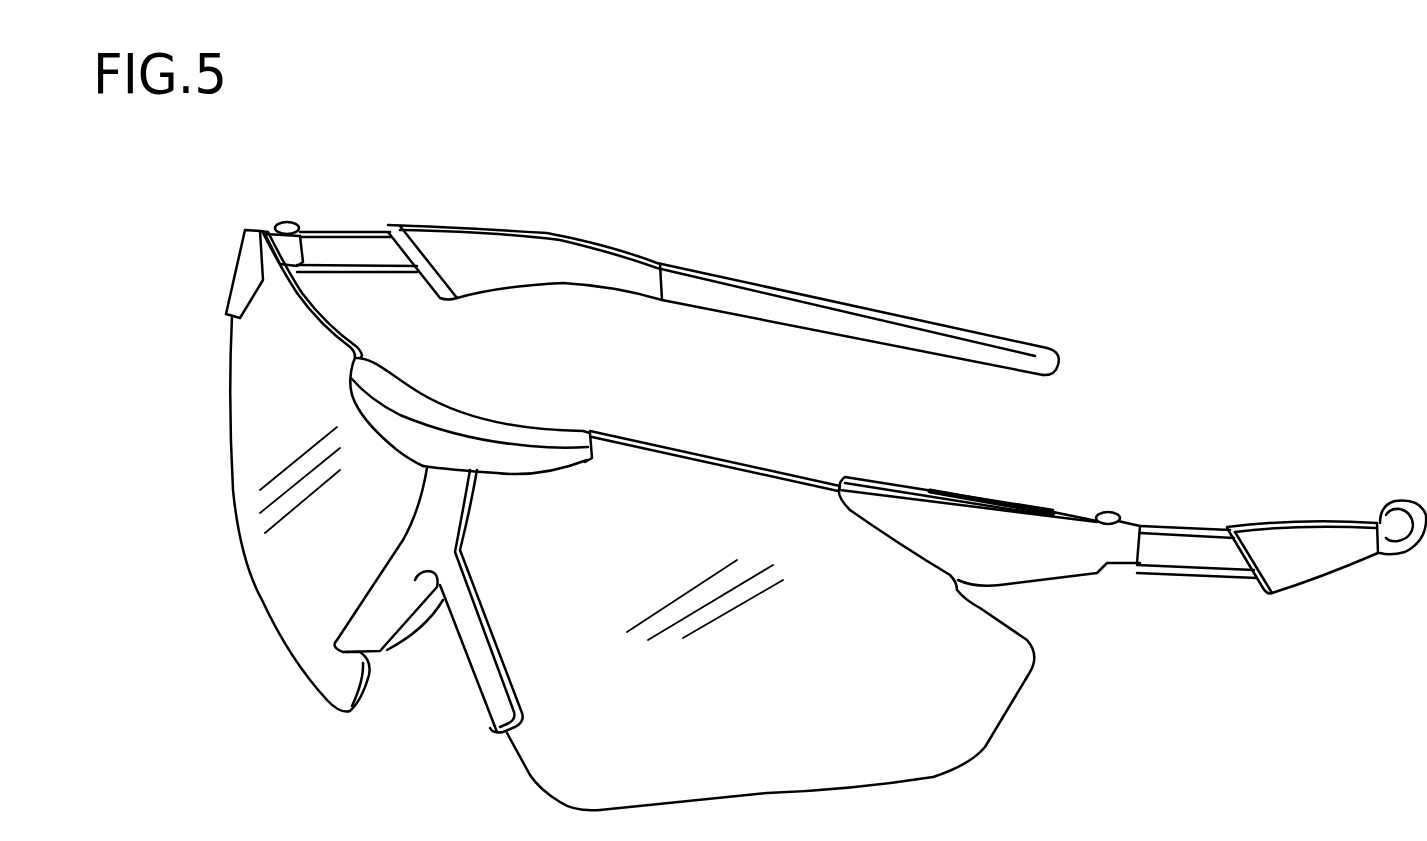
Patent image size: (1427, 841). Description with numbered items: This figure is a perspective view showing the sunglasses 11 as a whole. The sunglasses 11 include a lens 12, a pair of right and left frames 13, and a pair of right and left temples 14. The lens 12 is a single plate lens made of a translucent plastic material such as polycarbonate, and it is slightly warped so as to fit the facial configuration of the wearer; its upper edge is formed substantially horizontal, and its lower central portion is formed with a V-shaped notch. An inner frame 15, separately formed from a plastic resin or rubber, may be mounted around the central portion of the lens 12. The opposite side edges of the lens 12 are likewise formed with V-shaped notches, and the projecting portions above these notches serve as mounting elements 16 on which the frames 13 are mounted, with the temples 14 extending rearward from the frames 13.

The sunglasses 11 is at (840, 230).
The lens 12 is at (648, 498).
The frame 13 is at (240, 263).
The temple 14 is at (505, 222).
The inner frame 15 is at (480, 692).
The mounting element 16 is at (265, 233).